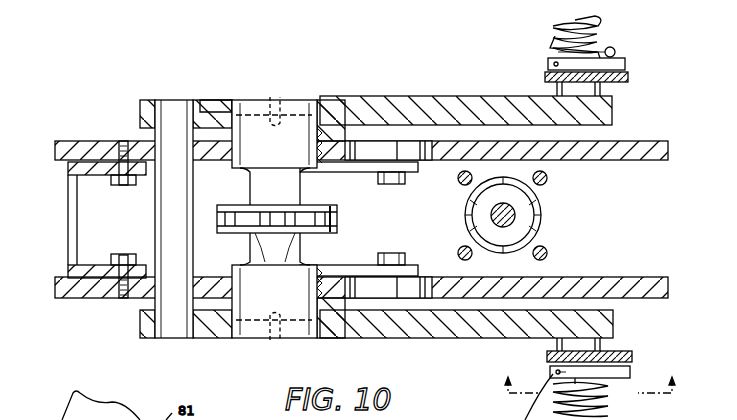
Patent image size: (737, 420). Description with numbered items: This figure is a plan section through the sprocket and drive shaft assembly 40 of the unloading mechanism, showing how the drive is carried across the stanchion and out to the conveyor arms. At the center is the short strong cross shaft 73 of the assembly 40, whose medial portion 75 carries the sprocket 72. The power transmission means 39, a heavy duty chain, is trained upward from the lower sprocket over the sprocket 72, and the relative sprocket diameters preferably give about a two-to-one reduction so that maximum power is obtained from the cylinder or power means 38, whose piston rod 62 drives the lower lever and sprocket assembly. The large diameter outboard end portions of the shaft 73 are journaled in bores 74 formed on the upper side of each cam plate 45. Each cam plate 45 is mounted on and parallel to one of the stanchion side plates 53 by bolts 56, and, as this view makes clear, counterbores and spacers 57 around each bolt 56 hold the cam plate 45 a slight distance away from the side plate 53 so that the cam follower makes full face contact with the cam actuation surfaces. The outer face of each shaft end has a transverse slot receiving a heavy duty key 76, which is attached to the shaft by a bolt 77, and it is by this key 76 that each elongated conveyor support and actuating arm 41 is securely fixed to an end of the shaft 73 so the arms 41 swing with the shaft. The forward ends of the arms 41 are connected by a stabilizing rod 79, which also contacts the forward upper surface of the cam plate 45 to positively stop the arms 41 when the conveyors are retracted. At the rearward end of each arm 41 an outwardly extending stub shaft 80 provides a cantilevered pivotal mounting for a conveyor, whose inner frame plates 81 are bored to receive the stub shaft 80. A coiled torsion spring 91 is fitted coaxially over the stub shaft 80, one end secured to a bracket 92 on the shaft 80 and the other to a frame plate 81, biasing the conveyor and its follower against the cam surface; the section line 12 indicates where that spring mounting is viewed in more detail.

The section line 12- 12 is at (591, 389).
The cylinder or power means 38 is at (543, 221).
The power transmission means 39 is at (326, 212).
The sprocket and drive shaft assembly 40 is at (259, 102).
The conveyor support and actuating arm 41 is at (403, 106).
The cam plate 45 is at (648, 150).
The side plate 53 is at (85, 171).
The bolt 56 is at (118, 183).
The spacer 57 is at (122, 142).
The piston rod 62 is at (510, 222).
The sprocket 72 is at (262, 222).
The cross shaft 73 is at (282, 262).
The bore 74 is at (312, 148).
The medial portion 75 is at (262, 190).
The key 76 is at (330, 102).
The bolt 77 is at (276, 96).
The stabilizing rod 79 is at (162, 208).
The stub shaft 80 is at (600, 28).
The inner frame plate 81 is at (622, 80).
The coiled torsion spring 91 is at (555, 40).
The bracket 92 is at (627, 64).